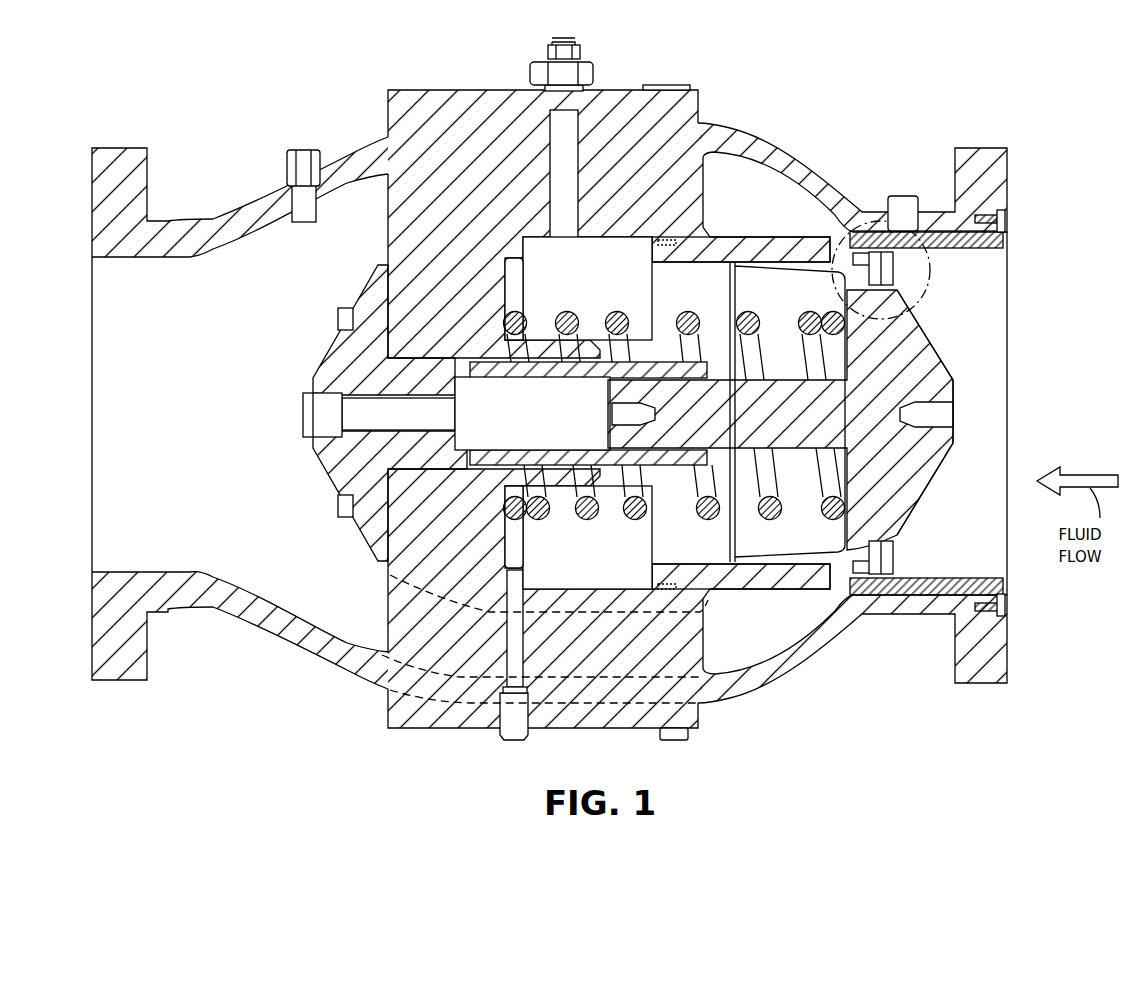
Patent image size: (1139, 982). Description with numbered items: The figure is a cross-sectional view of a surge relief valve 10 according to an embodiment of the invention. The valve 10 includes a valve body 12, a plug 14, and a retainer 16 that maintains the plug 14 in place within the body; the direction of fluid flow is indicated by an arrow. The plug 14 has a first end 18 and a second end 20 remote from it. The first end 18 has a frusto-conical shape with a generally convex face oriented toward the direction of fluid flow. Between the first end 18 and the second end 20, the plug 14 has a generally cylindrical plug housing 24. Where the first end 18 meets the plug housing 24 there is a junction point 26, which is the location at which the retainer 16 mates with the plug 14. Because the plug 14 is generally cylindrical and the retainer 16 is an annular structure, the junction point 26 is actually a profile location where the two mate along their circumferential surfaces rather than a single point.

The valve 10 is at (578, 411).
The valve body 12 is at (626, 96).
The plug 14 is at (905, 334).
The retainer 16 is at (1010, 249).
The first end 18 is at (938, 360).
The second end 20 is at (648, 292).
The plug housing 24 is at (757, 245).
The junction point 26 is at (917, 284).